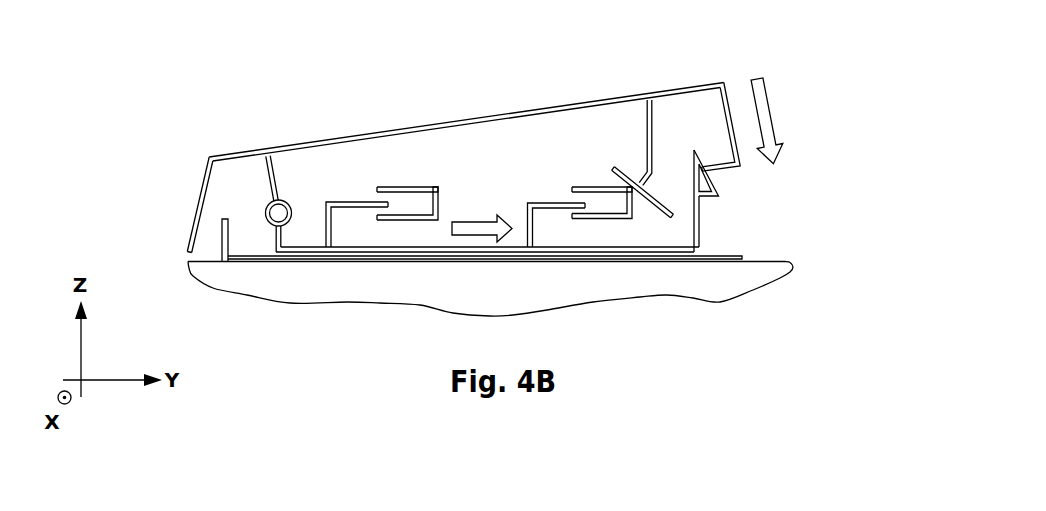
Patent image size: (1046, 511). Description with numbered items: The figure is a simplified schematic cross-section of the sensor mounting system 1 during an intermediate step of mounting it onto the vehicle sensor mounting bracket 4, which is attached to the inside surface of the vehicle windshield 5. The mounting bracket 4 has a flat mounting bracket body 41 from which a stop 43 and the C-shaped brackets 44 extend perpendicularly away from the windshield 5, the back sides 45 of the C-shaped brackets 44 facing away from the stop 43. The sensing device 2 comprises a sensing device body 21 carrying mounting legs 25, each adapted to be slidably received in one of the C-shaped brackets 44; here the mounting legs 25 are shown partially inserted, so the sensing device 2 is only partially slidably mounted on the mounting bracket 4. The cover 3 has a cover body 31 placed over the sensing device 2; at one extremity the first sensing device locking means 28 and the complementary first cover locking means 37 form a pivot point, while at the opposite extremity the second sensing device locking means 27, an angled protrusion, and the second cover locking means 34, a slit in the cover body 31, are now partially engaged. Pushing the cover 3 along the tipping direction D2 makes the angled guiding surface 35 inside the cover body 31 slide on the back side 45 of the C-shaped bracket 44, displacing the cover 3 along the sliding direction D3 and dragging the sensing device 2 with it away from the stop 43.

The sensor mounting system 1 is at (177, 98).
The sensing device 2 is at (783, 211).
The cover 3 is at (700, 42).
The vehicle sensor mounting bracket 4 is at (752, 250).
The vehicle windshield 5 is at (480, 301).
The sensing device body 21 is at (387, 246).
The mounting leg 25 is at (357, 201).
The second sensing device locking means 27 is at (707, 194).
The first sensing device locking means 28 is at (266, 213).
The cover body 31 is at (467, 121).
The second cover locking means 34 is at (736, 166).
The guiding surface 35 is at (643, 195).
The first cover locking means 37 is at (264, 178).
The mounting bracket body 41 is at (705, 259).
The stop 43 is at (222, 240).
The C-shaped bracket 44 is at (407, 188).
The back side of C-shaped bracket 45 is at (440, 188).
The tipping direction D2 is at (762, 113).
The sliding direction D3 is at (480, 224).